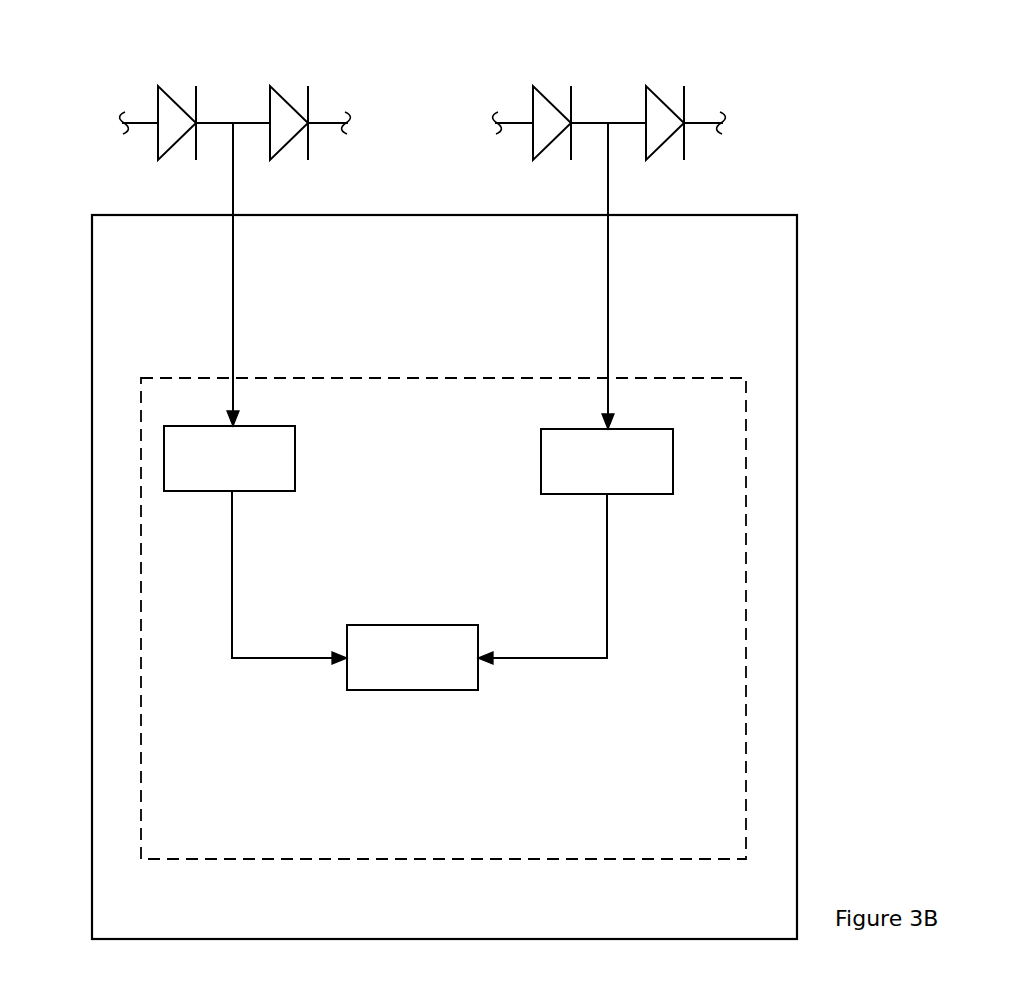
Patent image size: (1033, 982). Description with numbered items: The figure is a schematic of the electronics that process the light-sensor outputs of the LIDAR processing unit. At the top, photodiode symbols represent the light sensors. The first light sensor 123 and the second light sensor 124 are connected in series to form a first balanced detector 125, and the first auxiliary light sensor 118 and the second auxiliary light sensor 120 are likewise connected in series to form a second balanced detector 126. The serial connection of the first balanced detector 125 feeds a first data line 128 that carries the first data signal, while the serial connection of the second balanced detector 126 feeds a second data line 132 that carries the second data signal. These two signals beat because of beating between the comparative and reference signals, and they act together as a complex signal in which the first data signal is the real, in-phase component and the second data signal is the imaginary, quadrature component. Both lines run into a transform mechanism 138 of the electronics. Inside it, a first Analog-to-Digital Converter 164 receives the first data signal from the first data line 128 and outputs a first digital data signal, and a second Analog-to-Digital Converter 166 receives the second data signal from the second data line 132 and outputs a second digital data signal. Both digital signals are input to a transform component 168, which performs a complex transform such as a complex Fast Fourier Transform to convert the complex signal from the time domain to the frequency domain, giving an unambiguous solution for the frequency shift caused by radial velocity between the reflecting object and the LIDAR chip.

The first auxiliary light sensor 118 is at (533, 86).
The second auxiliary light sensor 120 is at (610, 85).
The first light sensor 123 is at (158, 86).
The second light sensor 124 is at (270, 86).
The first balanced detector 125 is at (227, 88).
The second balanced detector 126 is at (609, 88).
The first data line 128 is at (233, 240).
The second data line 132 is at (608, 235).
The transform mechanism 138 is at (92, 243).
The first Analog-to-Digital Converter (ADC) 164 is at (295, 452).
The second Analog-to-Digital Converter (ADC) 166 is at (541, 453).
The transform component 168 is at (417, 690).